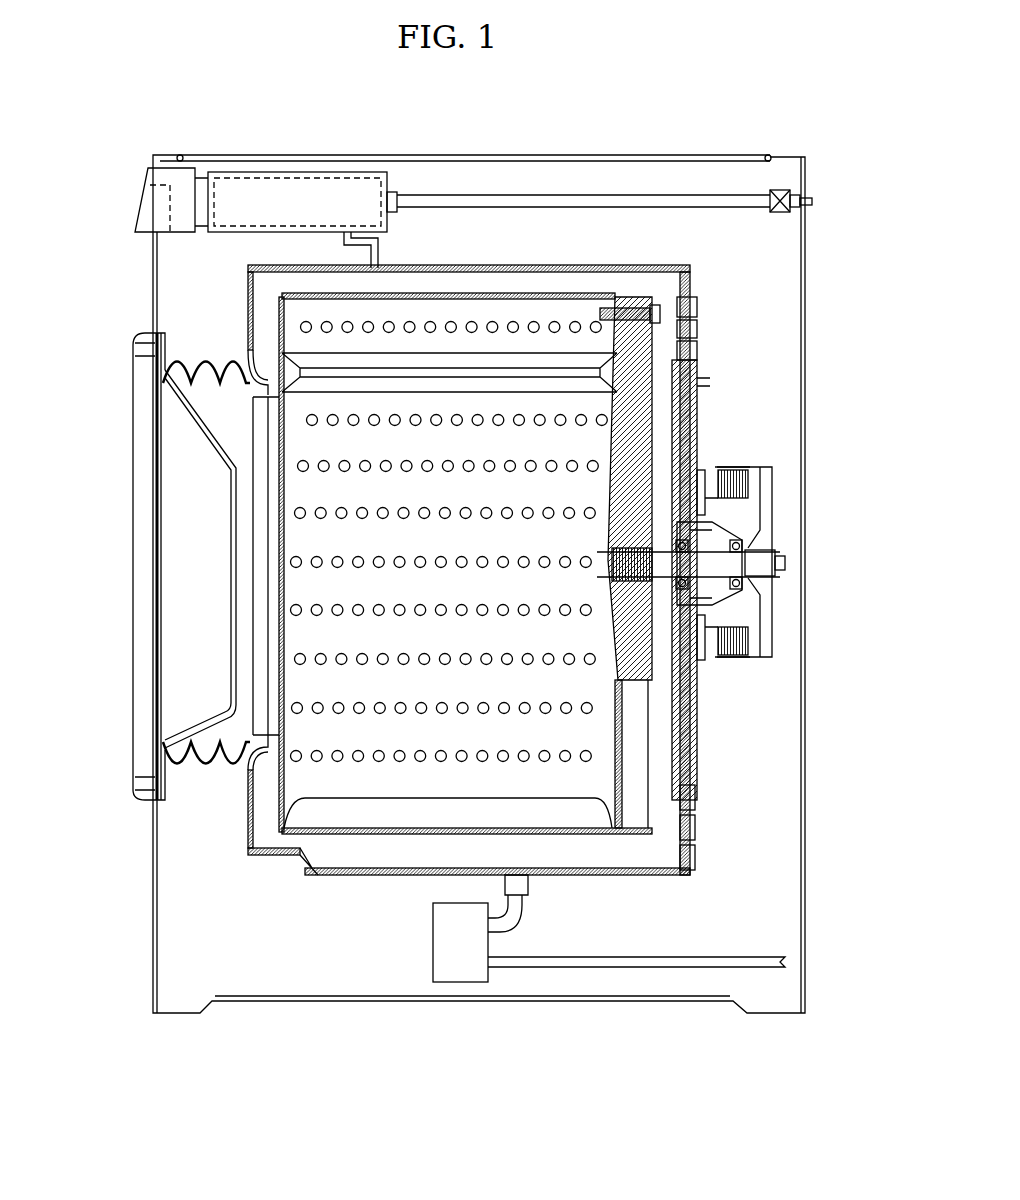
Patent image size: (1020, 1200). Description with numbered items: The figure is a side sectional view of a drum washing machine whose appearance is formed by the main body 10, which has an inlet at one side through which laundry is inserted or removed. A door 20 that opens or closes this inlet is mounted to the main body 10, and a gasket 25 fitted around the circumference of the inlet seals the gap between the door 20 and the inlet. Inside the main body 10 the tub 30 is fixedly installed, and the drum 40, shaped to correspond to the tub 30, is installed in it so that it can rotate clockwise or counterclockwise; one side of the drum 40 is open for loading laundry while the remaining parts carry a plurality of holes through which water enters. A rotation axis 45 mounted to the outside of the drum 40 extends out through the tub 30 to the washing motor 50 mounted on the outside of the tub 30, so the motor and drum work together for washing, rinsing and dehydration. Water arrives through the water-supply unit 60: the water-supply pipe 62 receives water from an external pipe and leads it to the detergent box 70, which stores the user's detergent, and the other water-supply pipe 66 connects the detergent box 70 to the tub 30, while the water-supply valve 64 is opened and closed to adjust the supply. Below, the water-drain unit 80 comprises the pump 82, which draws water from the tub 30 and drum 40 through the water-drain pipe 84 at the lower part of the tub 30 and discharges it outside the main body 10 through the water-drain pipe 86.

The main body 10 is at (640, 155).
The door 20 is at (135, 578).
The gasket 25 is at (182, 765).
The tub 30 is at (616, 877).
The drum 40 is at (382, 838).
The rotation axis 45 is at (710, 568).
The washing motor 50 is at (776, 464).
The water-supply unit 60 is at (604, 156).
The water-supply pipe 62 is at (712, 195).
The water-supply valve 64 is at (778, 190).
The water-supply pipe 66 is at (378, 252).
The detergent box 70 is at (340, 172).
The water-drain unit 80 is at (580, 970).
The pump 82 is at (435, 960).
The water-drain pipe 84 is at (518, 910).
The water-drain pipe 86 is at (686, 968).